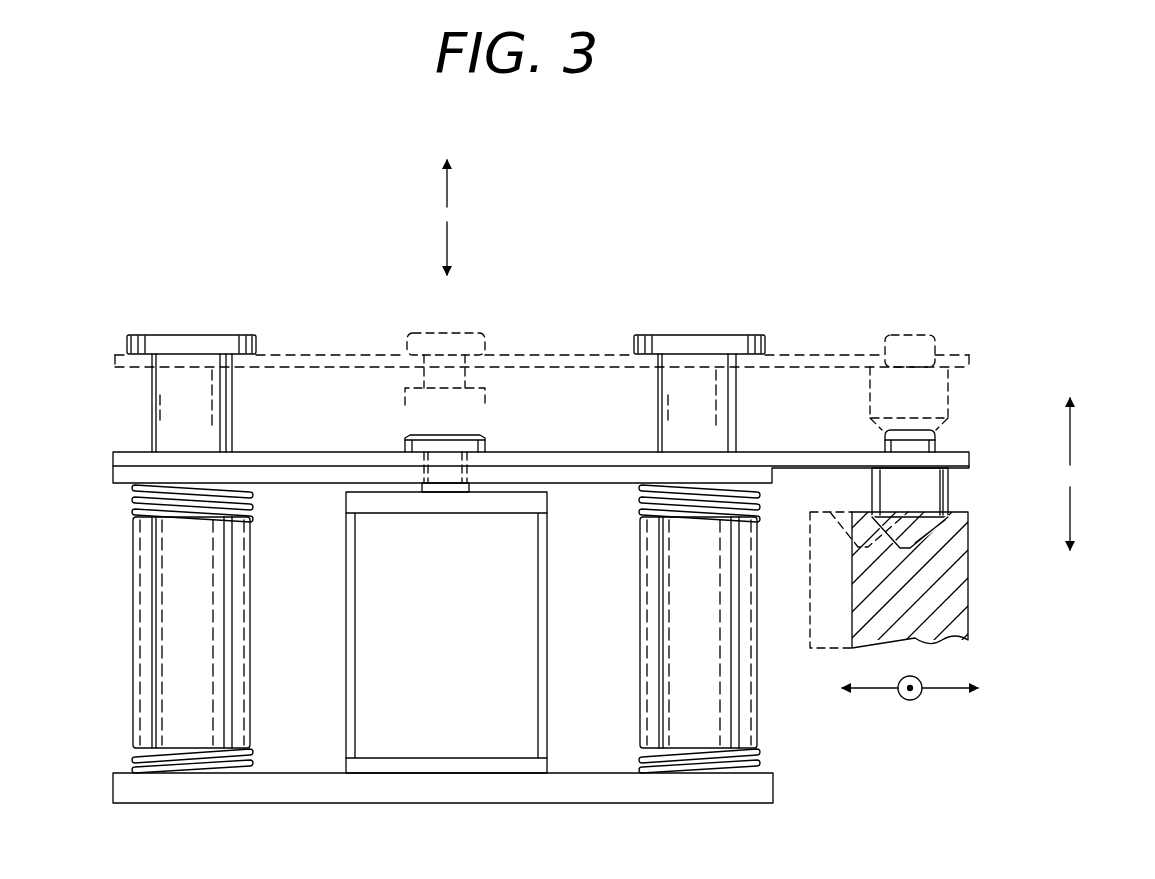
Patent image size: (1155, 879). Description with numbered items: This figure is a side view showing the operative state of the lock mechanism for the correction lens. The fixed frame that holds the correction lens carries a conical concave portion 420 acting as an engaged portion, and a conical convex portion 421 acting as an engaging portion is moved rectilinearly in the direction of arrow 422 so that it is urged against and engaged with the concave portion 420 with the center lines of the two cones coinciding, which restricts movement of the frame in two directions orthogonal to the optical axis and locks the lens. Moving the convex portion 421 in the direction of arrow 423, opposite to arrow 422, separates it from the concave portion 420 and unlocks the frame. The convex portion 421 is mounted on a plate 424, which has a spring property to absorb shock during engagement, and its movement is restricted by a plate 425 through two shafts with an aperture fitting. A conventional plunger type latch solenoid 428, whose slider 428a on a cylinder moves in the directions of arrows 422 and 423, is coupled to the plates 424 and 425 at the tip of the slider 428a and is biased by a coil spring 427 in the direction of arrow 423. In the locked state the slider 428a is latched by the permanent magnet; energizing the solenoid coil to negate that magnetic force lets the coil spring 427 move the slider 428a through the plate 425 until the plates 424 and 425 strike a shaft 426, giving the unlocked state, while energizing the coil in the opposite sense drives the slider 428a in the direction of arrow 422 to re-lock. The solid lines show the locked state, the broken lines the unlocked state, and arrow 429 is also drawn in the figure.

The conical concave portion 420 is at (967, 580).
The conical convex portion 421 is at (946, 490).
The arrow 422 is at (451, 244).
The arrow 423 is at (451, 182).
The plate 424 is at (957, 452).
The plate 425 is at (756, 467).
The shaft 426 is at (218, 338).
The coil spring 427 is at (133, 513).
The plunger type latch solenoid 428 is at (405, 745).
The slider 428a is at (483, 437).
The horizontal movement direction 429 is at (922, 700).